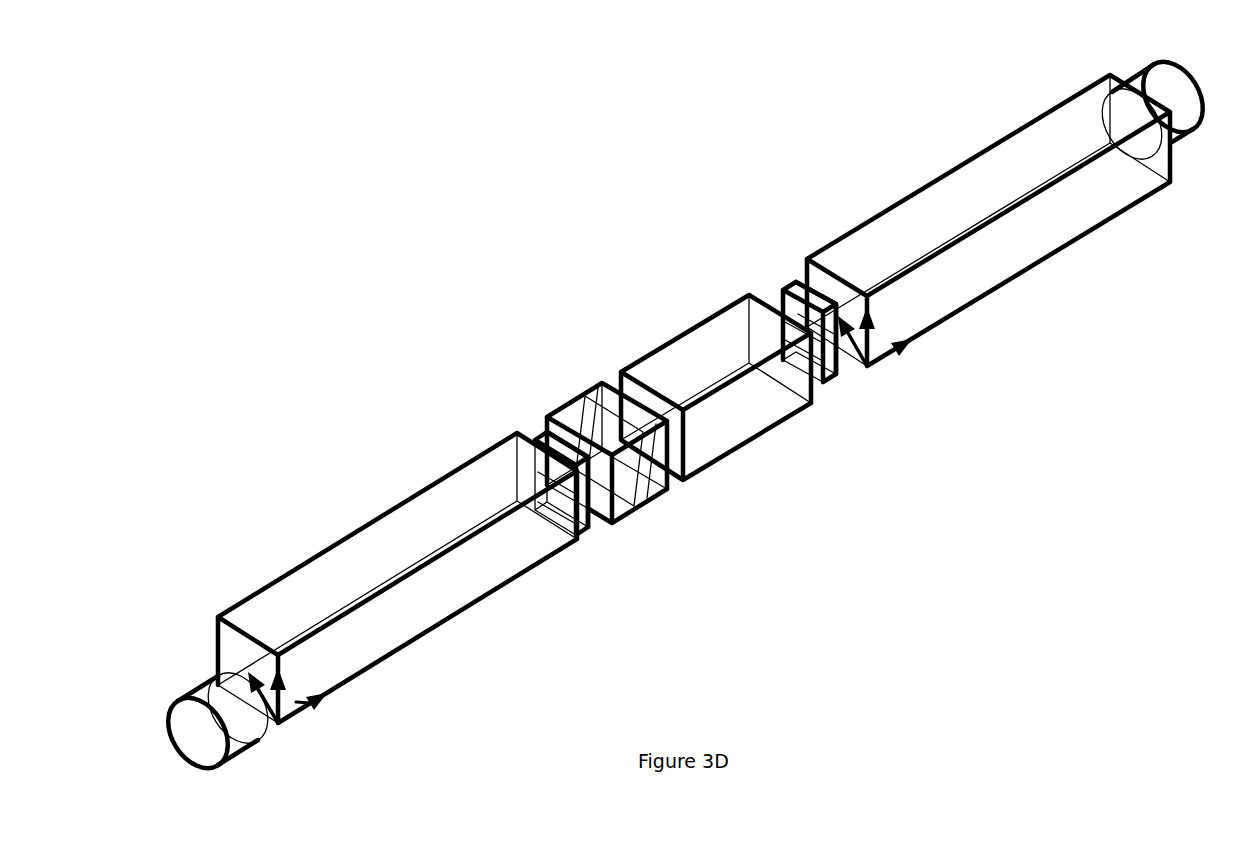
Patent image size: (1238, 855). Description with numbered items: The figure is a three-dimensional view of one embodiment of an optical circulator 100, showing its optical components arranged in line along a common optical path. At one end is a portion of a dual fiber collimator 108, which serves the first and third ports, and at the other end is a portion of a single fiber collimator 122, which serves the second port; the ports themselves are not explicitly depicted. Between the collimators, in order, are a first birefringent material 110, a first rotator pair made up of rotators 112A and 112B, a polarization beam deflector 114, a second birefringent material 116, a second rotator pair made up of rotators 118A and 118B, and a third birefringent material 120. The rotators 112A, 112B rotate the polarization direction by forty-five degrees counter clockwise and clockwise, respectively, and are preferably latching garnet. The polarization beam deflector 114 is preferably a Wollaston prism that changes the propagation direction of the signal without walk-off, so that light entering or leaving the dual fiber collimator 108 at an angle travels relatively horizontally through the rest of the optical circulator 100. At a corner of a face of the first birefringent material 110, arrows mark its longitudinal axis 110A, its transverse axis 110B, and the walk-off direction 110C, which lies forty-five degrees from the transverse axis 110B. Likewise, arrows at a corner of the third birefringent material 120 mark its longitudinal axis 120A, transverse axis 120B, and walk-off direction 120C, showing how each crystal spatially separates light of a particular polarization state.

The optical circulator 100 is at (665, 42).
The dual fiber collimator 108 is at (224, 760).
The first birefringent material 110 is at (242, 602).
The longitudinal axis 110A is at (307, 708).
The transverse axis 110B is at (286, 698).
The walk-off direction 110C is at (270, 722).
The rotator 112A is at (585, 528).
The rotator 112B is at (540, 436).
The polarization beam deflector 114 is at (595, 378).
The second birefringent material 116 is at (705, 322).
The rotator 118A is at (830, 382).
The rotator 118B is at (783, 288).
The third birefringent material 120 is at (822, 250).
The longitudinal axis 120A is at (888, 352).
The transverse axis 120B is at (868, 340).
The walk-off direction 120C is at (859, 368).
The single fiber collimator 122 is at (1135, 74).